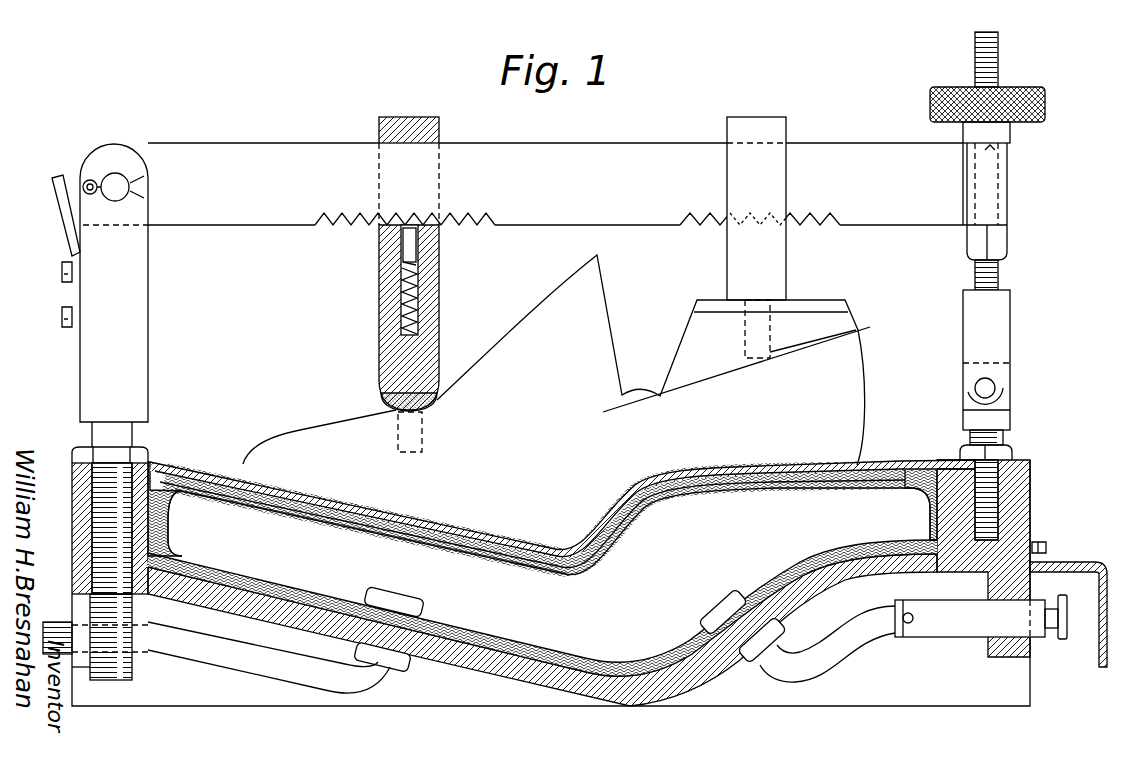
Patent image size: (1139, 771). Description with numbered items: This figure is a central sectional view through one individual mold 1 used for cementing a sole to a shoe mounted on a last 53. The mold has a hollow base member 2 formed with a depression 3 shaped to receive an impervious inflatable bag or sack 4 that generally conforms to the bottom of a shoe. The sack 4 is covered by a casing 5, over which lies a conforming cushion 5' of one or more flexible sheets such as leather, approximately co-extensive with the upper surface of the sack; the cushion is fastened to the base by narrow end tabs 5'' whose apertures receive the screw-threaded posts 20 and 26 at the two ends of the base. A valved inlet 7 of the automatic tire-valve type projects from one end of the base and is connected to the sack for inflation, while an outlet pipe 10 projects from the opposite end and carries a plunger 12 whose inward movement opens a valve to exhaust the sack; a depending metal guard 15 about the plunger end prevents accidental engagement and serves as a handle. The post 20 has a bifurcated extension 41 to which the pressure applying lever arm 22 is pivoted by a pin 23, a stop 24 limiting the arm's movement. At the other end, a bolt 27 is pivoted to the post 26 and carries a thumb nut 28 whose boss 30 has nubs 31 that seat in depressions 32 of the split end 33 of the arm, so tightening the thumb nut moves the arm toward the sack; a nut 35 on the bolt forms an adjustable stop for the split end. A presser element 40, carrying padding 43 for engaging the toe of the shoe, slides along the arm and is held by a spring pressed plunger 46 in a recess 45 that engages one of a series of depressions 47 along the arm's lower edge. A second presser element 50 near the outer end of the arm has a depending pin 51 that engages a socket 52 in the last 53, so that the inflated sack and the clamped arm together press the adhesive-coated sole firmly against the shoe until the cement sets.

The mold 1 is at (1030, 490).
The hollow base member 2 is at (1030, 522).
The depression 3 is at (610, 663).
The inflatable bag or sack 4 is at (423, 545).
The casing 5 is at (605, 504).
The conforming cushion 5' is at (567, 482).
The end tabs 5'' is at (1000, 456).
The valved inlet 7 is at (165, 640).
The outlet pipe 10 is at (967, 620).
The plunger 12 is at (1062, 639).
The depending metal guard 15 is at (1108, 615).
The screw-threaded post 20 is at (123, 430).
The lever arm 22 is at (533, 207).
The pin 23 is at (113, 185).
The stop 24 is at (62, 208).
The threaded post 26 is at (1008, 422).
The bolt 27 is at (997, 287).
The thumb nut 28 is at (1047, 100).
The boss 30 is at (1012, 132).
The nubs 31 is at (992, 145).
The depressions 32 is at (975, 140).
The split end 33 is at (1012, 225).
The nut 35 is at (978, 240).
The presser element 40 is at (393, 284).
The bifurcated extension 41 is at (137, 268).
The padding 43 is at (390, 402).
The recess 45 is at (417, 300).
The spring pressed plunger 46 is at (407, 243).
The depressions 47 is at (365, 210).
The presser element 50 is at (778, 247).
The depending pin 51 is at (753, 330).
The socket 52 is at (860, 330).
The last 53 is at (608, 317).